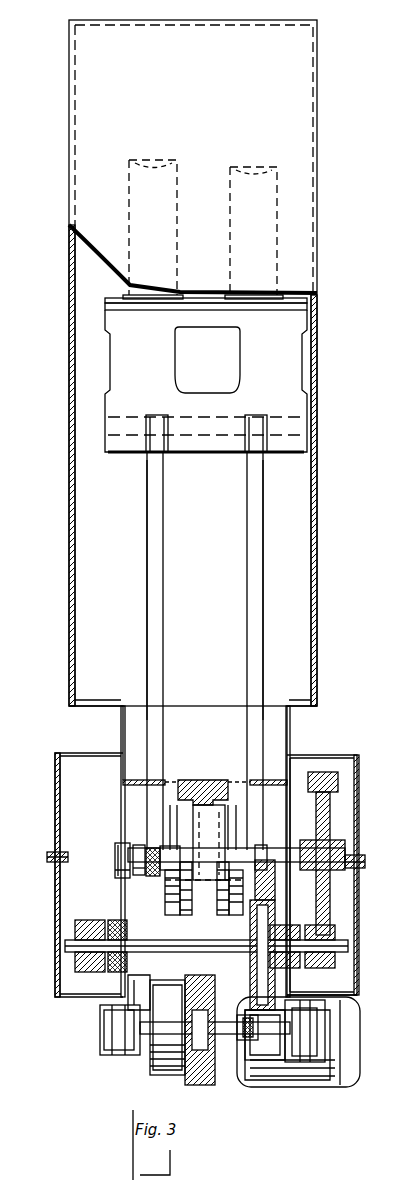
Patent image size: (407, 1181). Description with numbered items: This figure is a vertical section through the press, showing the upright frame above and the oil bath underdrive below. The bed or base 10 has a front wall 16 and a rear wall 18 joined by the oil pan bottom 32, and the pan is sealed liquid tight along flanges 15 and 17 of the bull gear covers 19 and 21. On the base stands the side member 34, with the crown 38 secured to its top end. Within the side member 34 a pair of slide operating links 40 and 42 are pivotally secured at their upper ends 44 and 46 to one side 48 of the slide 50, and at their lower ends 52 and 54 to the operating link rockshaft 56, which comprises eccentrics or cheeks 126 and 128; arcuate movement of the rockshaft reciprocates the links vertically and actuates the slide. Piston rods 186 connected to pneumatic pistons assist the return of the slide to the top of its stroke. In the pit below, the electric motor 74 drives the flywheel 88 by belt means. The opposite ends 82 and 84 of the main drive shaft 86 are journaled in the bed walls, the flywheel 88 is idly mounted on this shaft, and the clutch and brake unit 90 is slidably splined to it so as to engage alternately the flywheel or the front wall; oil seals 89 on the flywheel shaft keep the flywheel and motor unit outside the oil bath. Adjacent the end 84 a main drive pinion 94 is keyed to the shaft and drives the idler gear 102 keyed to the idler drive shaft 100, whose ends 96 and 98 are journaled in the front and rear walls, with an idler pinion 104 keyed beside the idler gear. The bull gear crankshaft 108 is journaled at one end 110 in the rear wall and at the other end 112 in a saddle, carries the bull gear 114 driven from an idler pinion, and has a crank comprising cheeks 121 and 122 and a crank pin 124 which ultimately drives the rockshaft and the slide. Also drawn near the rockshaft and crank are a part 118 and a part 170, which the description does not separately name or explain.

The bed or base 10 is at (362, 815).
The flange 15 is at (368, 887).
The front wall 16 is at (143, 980).
The flange 17 is at (372, 868).
The rear wall 18 is at (290, 733).
The bull gear cover 19 is at (68, 808).
The bull gear cover 21 is at (345, 840).
The bottom 32 is at (333, 995).
The side member 34 is at (313, 615).
The crown 38 is at (303, 60).
The slide operating link 40 is at (155, 588).
The slide operating link 42 is at (258, 590).
The upper end 44 is at (152, 467).
The upper end 46 is at (253, 462).
The side 48 is at (247, 364).
The slide 50 is at (272, 390).
The lower end 52 is at (150, 880).
The lower end 54 is at (255, 845).
The operating link rockshaft 56 is at (137, 845).
The electric motor 74 is at (352, 1040).
The end 82 is at (100, 1025).
The end 84 is at (325, 1025).
The main drive shaft 86 is at (140, 1040).
The flywheel 88 is at (212, 1085).
The oil seal 89 is at (258, 1020).
The clutch and brake unit 90 is at (152, 1065).
The main drive pinion 94 is at (275, 1060).
The end 96 is at (70, 945).
The end 98 is at (370, 952).
The idler drive shaft 100 is at (378, 930).
The idler gear 102 is at (250, 940).
The idler pinion 104 is at (80, 918).
The bull gear crankshaft 108 is at (275, 885).
The end 110 is at (300, 835).
The end 112 is at (172, 845).
The bull gear 114 is at (322, 772).
The collar 118 is at (117, 857).
The cheek 121 is at (175, 880).
The cheek 122 is at (223, 840).
The crank pin 124 is at (214, 843).
The eccentric or cheek 126 is at (174, 795).
The eccentric or cheek 128 is at (233, 795).
The gear 170 is at (205, 889).
The piston rod 186 is at (230, 182).